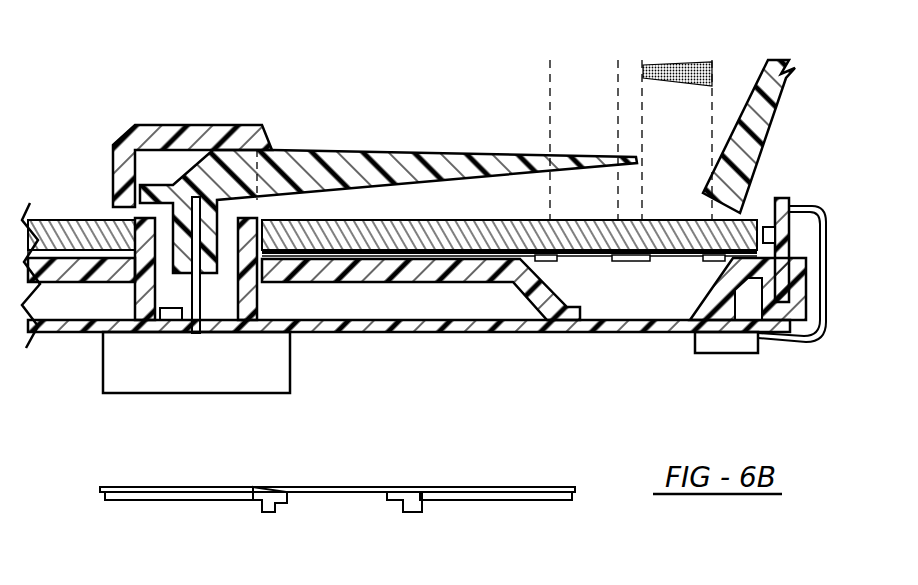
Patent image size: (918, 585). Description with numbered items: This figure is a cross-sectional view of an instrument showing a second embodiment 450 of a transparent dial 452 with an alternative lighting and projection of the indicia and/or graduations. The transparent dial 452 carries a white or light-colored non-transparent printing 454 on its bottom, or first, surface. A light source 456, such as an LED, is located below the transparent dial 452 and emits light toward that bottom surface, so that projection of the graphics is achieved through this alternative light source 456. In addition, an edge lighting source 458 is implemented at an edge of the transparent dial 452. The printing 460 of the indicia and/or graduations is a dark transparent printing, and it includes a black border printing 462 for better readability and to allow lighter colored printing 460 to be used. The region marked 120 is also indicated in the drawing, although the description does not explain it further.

The display assembly 450 is at (178, 72).
The display panel 452 is at (460, 232).
The adhesive layer 454 is at (405, 243).
The base plate 456 is at (630, 334).
The flexible cable 458 is at (815, 200).
The support bracket 460 is at (573, 259).
The gasket strip 462 is at (208, 505).
The bezel region 120 is at (631, 139).